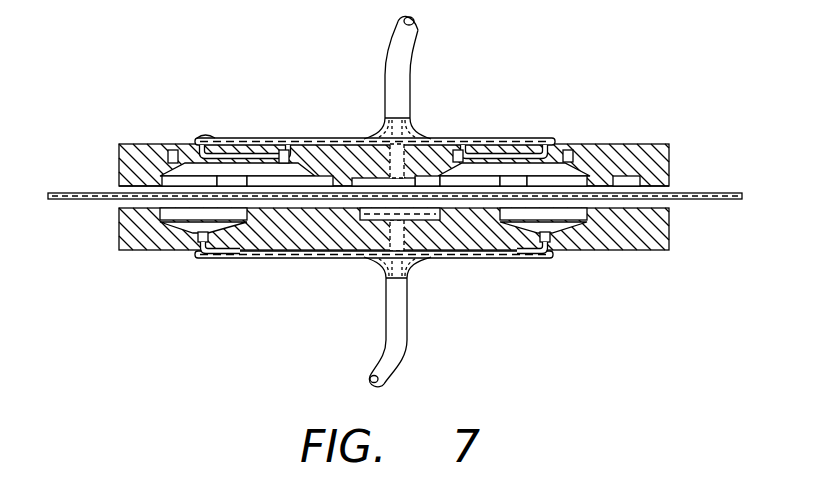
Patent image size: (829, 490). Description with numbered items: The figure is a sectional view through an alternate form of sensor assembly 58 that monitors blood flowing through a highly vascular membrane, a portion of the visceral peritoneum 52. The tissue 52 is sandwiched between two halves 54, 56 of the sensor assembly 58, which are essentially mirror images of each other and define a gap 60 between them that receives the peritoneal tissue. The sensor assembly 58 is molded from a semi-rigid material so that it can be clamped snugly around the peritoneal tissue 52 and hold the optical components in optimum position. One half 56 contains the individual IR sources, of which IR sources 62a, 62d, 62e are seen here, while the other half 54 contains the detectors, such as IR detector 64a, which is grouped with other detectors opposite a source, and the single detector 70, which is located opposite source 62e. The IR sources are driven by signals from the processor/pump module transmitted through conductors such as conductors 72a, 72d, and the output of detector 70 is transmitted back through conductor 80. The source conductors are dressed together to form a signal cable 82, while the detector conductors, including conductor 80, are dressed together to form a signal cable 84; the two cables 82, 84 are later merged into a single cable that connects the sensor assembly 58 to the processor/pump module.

The visceral peritoneum 52 is at (70, 200).
The half of sensor assembly 54 is at (125, 144).
The half of sensor assembly 56 is at (118, 240).
The sensor assembly 58 is at (382, 175).
The gap 60 is at (100, 182).
The IR source 62a is at (188, 228).
The IR source 62d is at (568, 225).
The IR source 62e is at (418, 228).
The IR detector 64a is at (298, 175).
The detector 70 is at (423, 140).
The conductor 72a is at (230, 252).
The conductor 72d is at (527, 255).
The conductor 80 is at (397, 117).
The signal cable 82 is at (386, 307).
The signal cable 84 is at (410, 36).